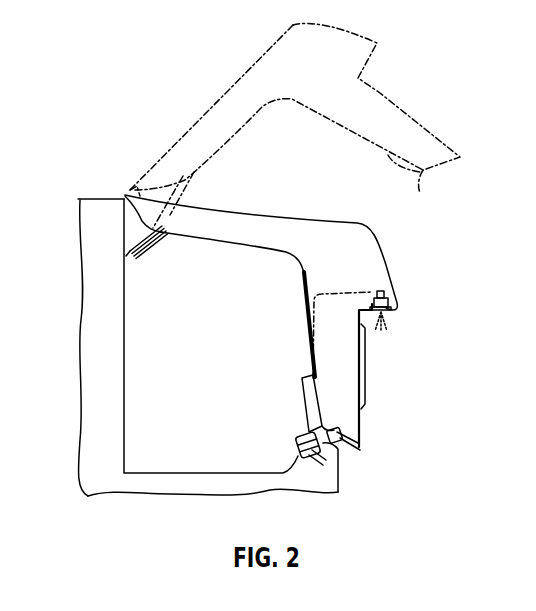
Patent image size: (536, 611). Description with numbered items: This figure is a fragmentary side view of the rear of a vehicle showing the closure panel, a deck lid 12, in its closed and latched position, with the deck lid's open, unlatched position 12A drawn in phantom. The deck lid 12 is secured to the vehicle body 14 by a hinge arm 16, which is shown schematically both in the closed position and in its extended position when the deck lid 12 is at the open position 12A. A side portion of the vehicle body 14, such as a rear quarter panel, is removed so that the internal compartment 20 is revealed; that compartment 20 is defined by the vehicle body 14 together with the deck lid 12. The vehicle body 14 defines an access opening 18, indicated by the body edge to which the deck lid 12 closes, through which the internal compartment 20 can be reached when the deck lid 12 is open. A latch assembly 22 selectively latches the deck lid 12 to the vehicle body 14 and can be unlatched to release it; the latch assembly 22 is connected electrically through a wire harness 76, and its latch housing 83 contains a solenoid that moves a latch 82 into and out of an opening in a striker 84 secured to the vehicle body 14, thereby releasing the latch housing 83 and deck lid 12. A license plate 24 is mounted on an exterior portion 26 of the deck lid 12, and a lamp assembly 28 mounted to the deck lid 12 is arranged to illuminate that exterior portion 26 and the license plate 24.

The open position 12A is at (382, 92).
The closure panel 12 is at (380, 252).
The vehicle body 14 is at (85, 236).
The hinge arm 16 is at (193, 180).
The access opening 18 is at (346, 442).
The internal compartment 20 is at (165, 336).
The latch assembly 22 is at (289, 440).
The license plate 24 is at (367, 336).
The exterior portion 26 is at (368, 383).
The lamp assembly 28 is at (402, 322).
The wire harness 76 is at (308, 360).
The latch 82 is at (297, 437).
The latch housing 83 is at (302, 397).
The striker 84 is at (284, 479).